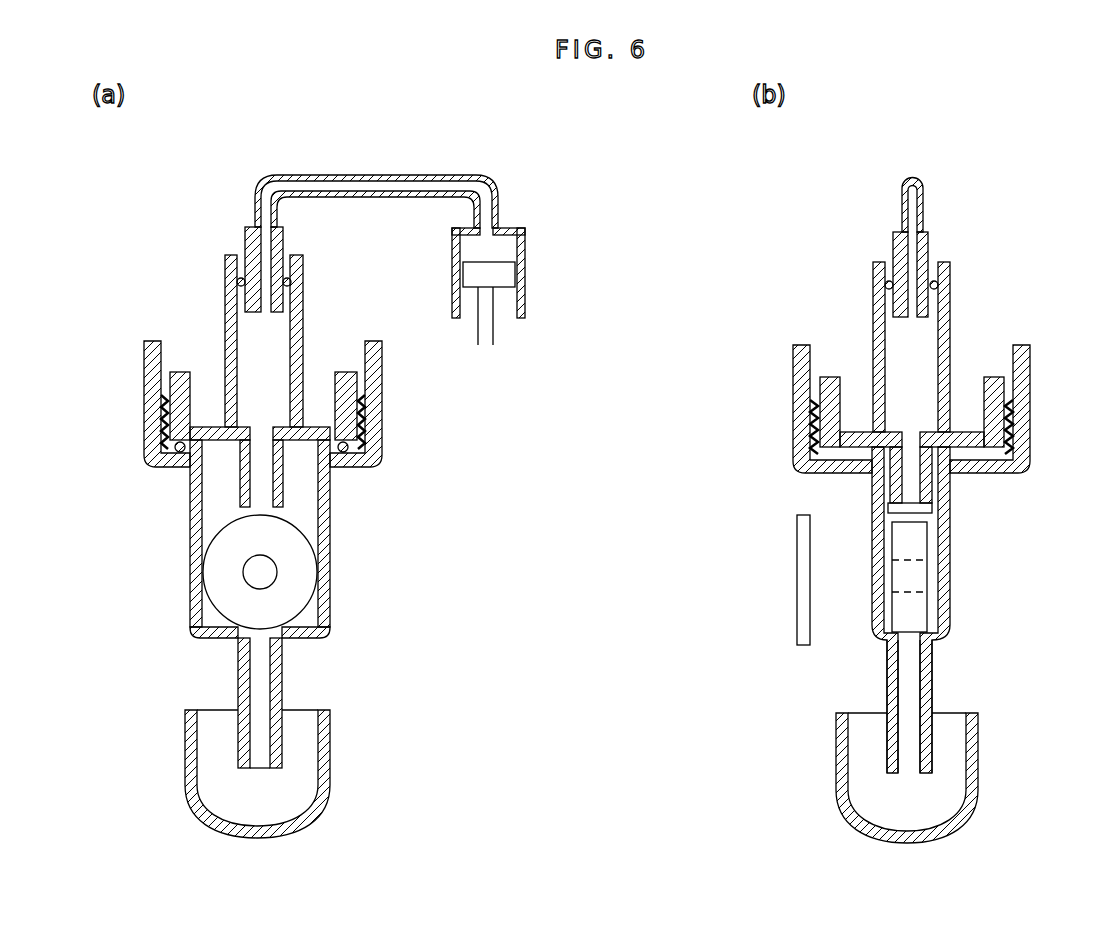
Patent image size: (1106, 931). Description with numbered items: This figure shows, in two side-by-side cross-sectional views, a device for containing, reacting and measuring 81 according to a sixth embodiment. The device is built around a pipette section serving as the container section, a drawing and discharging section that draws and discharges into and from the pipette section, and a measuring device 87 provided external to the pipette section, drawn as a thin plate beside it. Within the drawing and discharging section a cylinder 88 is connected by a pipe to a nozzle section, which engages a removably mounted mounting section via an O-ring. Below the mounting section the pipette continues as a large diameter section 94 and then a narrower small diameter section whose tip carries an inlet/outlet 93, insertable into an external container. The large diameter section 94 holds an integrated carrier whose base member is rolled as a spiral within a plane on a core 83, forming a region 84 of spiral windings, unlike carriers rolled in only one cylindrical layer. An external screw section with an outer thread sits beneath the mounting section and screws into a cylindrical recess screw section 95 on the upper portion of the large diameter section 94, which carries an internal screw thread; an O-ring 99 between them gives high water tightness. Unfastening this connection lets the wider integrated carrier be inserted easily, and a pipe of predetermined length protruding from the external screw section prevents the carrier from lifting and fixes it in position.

The device for containing, reacting and measuring 81 is at (320, 136).
The core 83 is at (258, 574).
The region 84 is at (215, 552).
The measuring device 87 is at (797, 580).
The cylinder 88 is at (525, 282).
The inlet/outlet 93 is at (258, 770).
The large diameter section 94 is at (330, 612).
The recess screw section 95 is at (444, 391).
The O-ring 99 is at (163, 467).